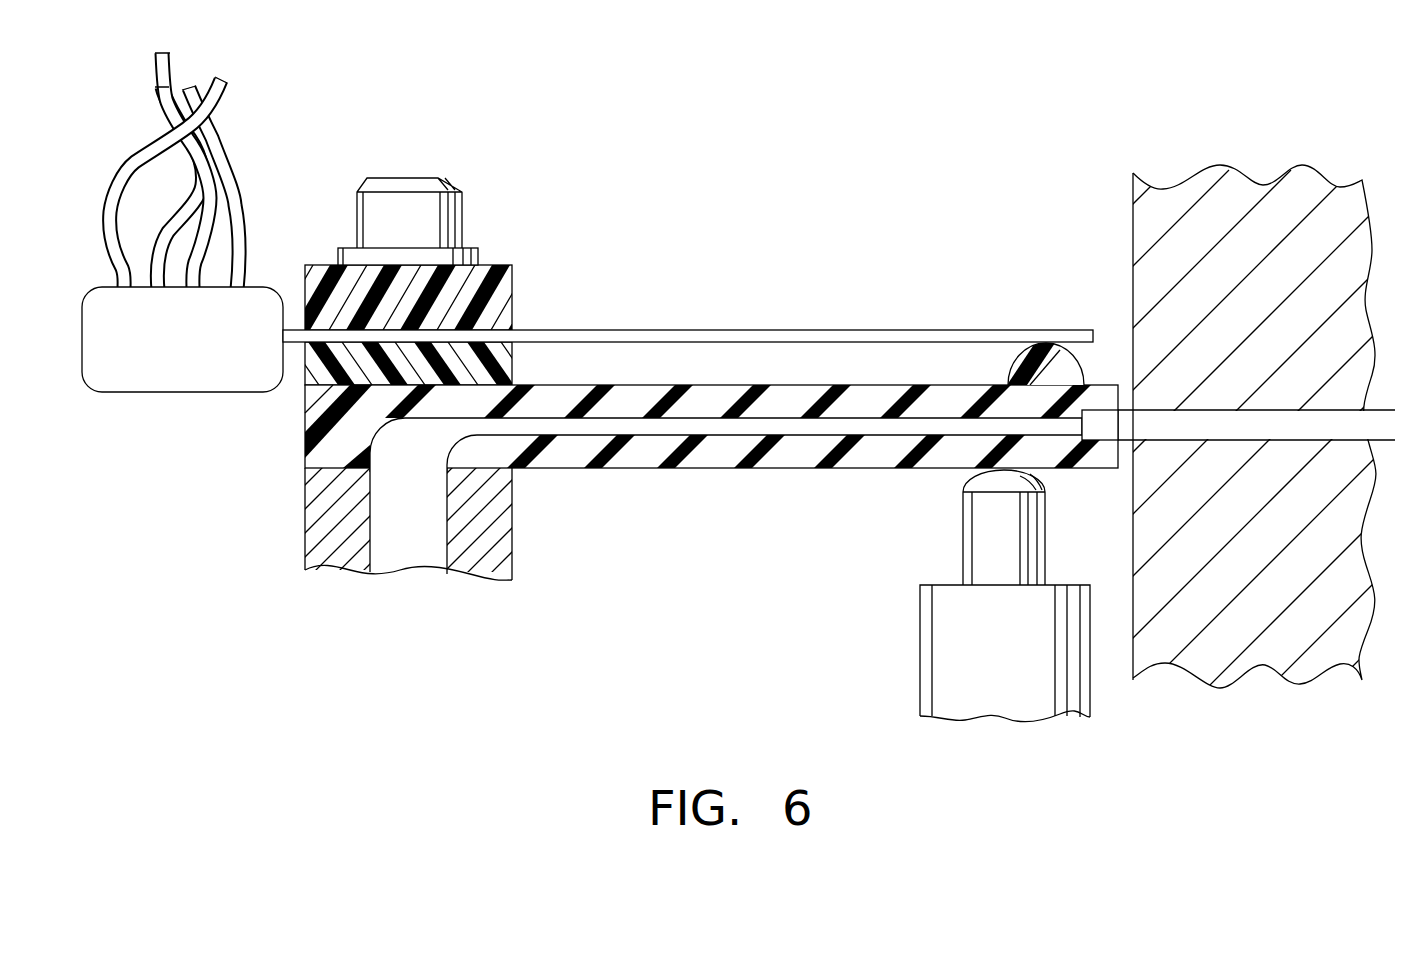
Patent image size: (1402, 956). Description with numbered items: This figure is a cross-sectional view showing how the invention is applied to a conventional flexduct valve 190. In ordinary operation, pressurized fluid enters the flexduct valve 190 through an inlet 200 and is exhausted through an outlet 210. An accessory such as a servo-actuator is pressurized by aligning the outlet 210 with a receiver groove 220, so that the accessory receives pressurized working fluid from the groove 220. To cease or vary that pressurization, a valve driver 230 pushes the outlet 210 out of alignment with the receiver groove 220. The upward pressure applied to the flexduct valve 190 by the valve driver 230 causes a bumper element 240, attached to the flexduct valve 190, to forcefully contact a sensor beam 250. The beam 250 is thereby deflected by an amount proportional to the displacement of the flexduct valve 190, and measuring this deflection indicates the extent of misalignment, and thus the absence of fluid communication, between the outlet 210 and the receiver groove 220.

The flexduct valve 190 is at (694, 489).
The inlet 200 is at (403, 551).
The outlet 210 is at (1137, 451).
The receiver groove 220 is at (1122, 402).
The valve driver 230 is at (1010, 656).
The bumper element 240 is at (1058, 363).
The sensor beam 250 is at (757, 328).